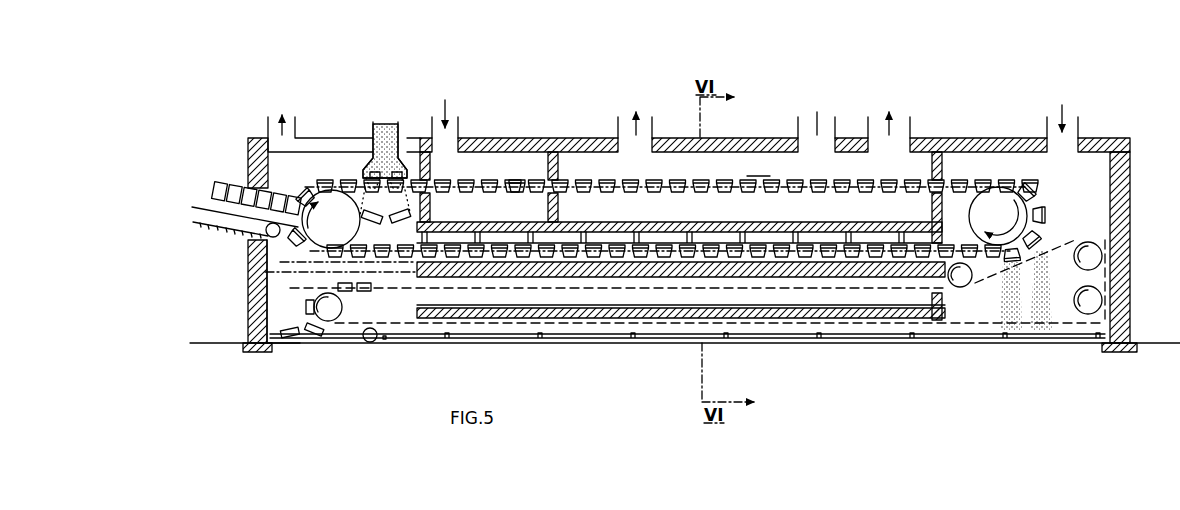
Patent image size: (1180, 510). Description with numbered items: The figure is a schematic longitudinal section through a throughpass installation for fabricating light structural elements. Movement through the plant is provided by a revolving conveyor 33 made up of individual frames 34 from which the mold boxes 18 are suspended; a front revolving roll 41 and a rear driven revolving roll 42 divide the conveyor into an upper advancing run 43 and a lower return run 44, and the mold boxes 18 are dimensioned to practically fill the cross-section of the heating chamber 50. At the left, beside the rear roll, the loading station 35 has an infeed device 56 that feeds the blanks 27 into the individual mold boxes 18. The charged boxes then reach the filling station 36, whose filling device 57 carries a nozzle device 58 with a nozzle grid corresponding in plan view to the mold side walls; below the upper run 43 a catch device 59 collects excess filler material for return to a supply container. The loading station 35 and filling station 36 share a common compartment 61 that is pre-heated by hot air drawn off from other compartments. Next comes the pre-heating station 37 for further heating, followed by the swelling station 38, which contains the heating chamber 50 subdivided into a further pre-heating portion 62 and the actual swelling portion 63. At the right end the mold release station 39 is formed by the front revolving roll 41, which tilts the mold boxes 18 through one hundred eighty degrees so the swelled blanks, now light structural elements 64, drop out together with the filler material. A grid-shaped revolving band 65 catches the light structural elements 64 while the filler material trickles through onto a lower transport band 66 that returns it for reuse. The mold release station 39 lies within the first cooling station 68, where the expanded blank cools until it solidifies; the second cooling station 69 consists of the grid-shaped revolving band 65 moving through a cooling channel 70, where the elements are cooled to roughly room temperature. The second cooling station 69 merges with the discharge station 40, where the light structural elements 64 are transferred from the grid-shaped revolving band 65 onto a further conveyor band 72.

The mold boxes 18 is at (322, 214).
The blanks 27 is at (213, 193).
The revolving conveyor 33 is at (493, 170).
The frames 34 is at (518, 180).
The loading station 35 is at (236, 240).
The filling station 36 is at (357, 131).
The pre-heating station 37 is at (480, 124).
The swelling station 38 is at (751, 127).
The mold release station 39 is at (1094, 223).
The discharge station 40 is at (294, 354).
The front revolving roll 41 is at (1020, 210).
The rear driven revolving roll 42 is at (326, 212).
The upper advancing run 43 is at (733, 192).
The lower return run 44 is at (772, 244).
The heating chamber 50 is at (758, 166).
The infeed device 56 is at (203, 227).
The filling device 57 is at (384, 128).
The nozzle device 58 is at (369, 175).
The catch device 59 is at (399, 220).
The common compartment 61 is at (277, 152).
The further pre-heating portion 62 is at (594, 168).
The swelling portion 63 is at (850, 170).
The light structural elements 64 is at (1010, 262).
The grid-shaped revolving band 65 is at (1022, 262).
The transport band 66 is at (958, 340).
The first cooling station 68 is at (1014, 127).
The second cooling station 69 is at (861, 293).
The cooling channel 70 is at (767, 297).
The further conveyor band 72 is at (323, 338).